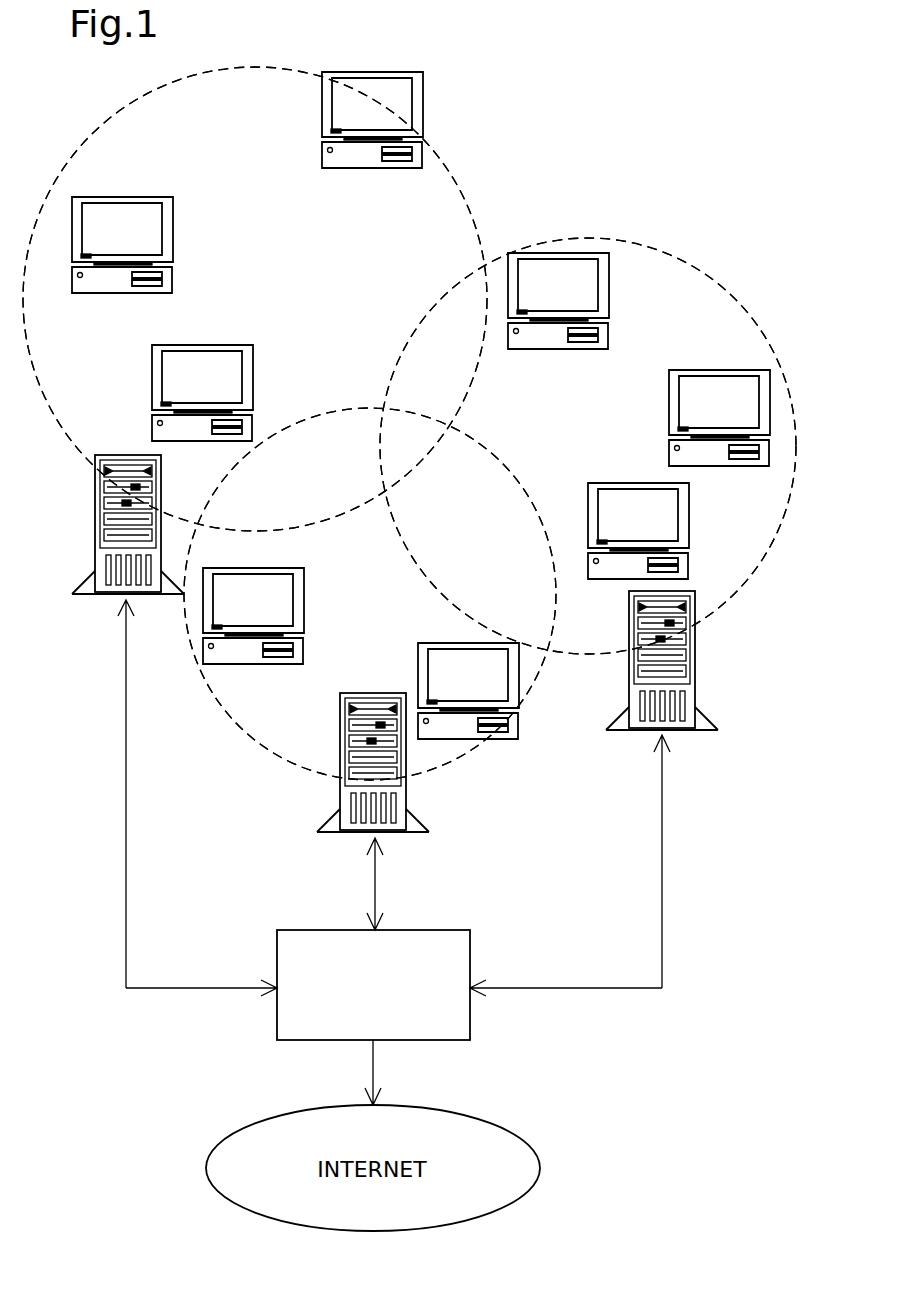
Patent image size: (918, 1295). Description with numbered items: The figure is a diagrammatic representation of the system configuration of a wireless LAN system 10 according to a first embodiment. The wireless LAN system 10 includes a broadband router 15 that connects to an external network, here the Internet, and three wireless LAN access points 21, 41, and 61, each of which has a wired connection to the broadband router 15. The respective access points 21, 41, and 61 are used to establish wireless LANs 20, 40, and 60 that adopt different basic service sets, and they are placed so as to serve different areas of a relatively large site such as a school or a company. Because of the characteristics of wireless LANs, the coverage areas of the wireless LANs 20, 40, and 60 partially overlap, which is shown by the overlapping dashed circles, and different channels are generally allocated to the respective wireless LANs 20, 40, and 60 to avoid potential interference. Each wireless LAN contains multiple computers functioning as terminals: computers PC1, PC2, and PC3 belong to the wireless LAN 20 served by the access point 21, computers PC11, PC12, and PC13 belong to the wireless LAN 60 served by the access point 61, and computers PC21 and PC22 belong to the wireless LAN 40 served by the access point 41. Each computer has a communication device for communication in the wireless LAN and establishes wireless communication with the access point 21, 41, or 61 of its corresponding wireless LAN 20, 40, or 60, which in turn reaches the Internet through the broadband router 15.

The wireless LAN system 10 is at (566, 183).
The wireless LAN 20 is at (269, 314).
The wireless LAN 40 is at (389, 569).
The wireless LAN 60 is at (600, 454).
The wireless LAN access point 21 is at (95, 520).
The wireless LAN access point 41 is at (340, 702).
The wireless LAN access point 61 is at (697, 659).
The broadband router 15 is at (432, 930).
The computer PC1 is at (174, 229).
The computer PC2 is at (255, 375).
The computer PC3 is at (424, 104).
The computer PC11 is at (610, 287).
The computer PC12 is at (668, 403).
The computer PC13 is at (690, 514).
The computer PC21 is at (305, 600).
The computer PC22 is at (520, 676).